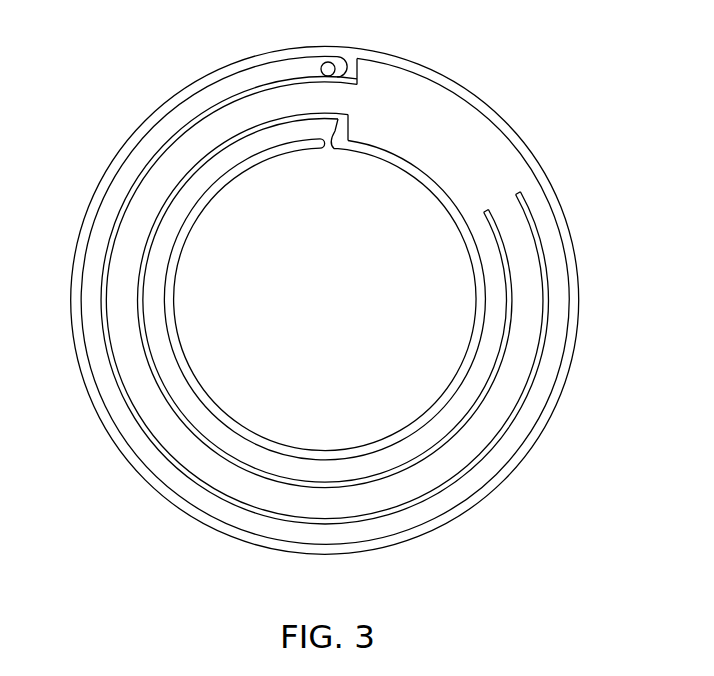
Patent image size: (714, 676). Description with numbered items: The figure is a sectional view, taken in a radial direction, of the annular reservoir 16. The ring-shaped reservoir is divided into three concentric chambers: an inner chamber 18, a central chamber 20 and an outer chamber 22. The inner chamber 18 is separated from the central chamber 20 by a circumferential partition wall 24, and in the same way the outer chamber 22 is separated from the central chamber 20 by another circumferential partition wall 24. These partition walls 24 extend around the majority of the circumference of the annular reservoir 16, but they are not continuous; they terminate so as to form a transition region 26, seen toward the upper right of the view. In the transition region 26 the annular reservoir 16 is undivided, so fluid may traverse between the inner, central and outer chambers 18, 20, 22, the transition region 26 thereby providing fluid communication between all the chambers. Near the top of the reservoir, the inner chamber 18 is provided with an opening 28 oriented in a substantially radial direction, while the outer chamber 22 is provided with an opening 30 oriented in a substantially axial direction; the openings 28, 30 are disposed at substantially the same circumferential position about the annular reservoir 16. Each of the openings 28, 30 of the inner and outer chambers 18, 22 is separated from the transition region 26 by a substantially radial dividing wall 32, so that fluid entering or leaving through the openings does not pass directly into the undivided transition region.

The annular reservoir 16 is at (561, 129).
The inner chamber 18 is at (340, 484).
The central chamber 20 is at (342, 514).
The outer chamber 22 is at (342, 545).
The circumferential partition wall 24 is at (148, 370).
The transition region 26 is at (482, 170).
The opening 28 is at (328, 151).
The opening 30 is at (328, 62).
The radial dividing wall 32 is at (359, 88).